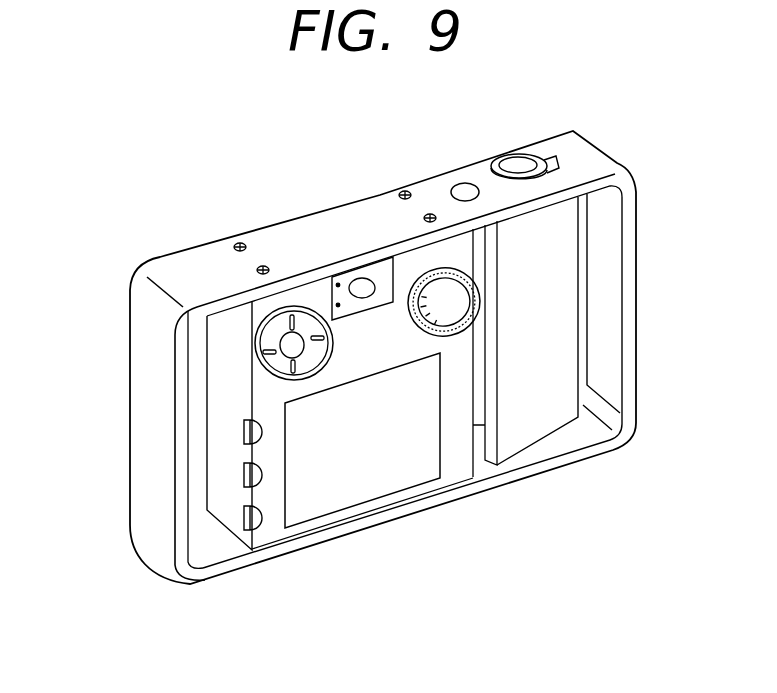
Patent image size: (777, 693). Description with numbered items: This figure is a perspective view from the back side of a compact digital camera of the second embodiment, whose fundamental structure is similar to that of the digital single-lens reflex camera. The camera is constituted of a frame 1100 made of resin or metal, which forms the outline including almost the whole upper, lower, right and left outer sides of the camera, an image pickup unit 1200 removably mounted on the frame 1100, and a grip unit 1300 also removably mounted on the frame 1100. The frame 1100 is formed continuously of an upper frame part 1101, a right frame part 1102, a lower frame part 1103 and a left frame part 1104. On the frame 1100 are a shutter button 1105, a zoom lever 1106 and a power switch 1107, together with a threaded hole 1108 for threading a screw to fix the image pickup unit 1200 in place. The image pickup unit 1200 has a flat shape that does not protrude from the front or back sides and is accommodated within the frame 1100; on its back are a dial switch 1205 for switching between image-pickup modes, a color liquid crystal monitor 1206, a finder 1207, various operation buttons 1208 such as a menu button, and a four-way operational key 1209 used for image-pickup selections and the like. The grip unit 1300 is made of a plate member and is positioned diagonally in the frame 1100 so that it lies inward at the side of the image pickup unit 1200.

The frame 1100 is at (604, 149).
The upper frame part 1101 is at (200, 268).
The right frame part 1102 is at (150, 449).
The lower frame part 1103 is at (514, 477).
The left frame part 1104 is at (637, 257).
The shutter button 1105 is at (515, 165).
The zoom lever 1106 is at (551, 160).
The power switch 1107 is at (464, 188).
The threaded hole 1108 is at (426, 216).
The image pickup unit 1200 is at (235, 538).
The dial switch 1205 is at (470, 296).
The color liquid crystal monitor 1206 is at (367, 482).
The finder 1207 is at (364, 300).
The operation buttons 1208 is at (243, 432).
The four-way operational key 1209 is at (258, 346).
The grip unit 1300 is at (557, 410).